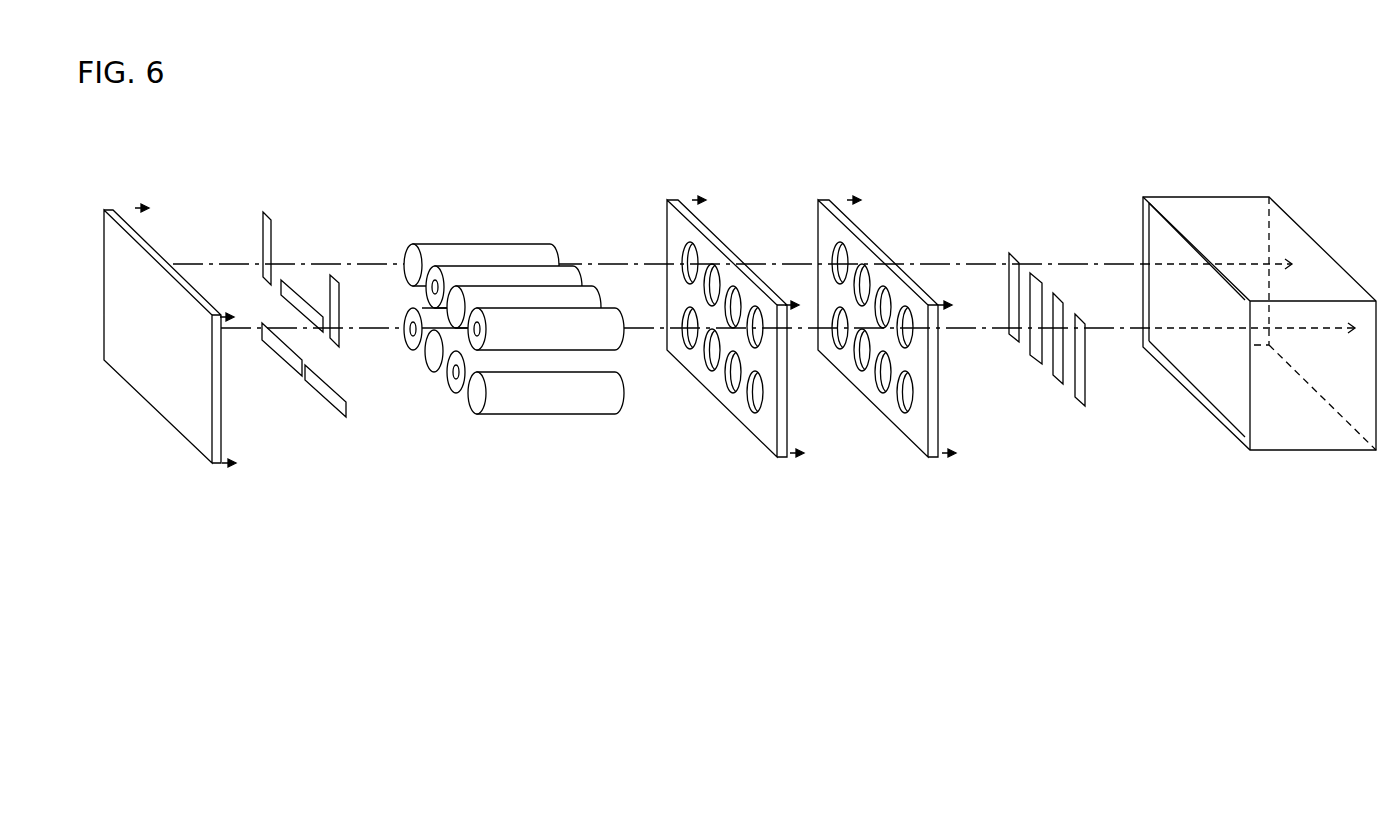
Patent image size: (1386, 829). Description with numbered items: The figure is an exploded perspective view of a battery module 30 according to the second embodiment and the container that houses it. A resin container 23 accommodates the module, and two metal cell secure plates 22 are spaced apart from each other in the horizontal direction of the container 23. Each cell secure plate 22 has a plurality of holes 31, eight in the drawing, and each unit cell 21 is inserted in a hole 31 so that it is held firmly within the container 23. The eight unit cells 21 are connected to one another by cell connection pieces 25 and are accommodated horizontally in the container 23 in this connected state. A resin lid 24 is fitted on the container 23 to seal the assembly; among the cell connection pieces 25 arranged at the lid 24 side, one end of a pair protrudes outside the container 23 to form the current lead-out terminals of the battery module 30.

The battery module 30 is at (1159, 93).
The resin lid 24 is at (128, 250).
The cell connection piece 25 is at (263, 212).
The unit cell 21 is at (485, 253).
The cell secure plate 22 is at (667, 203).
The hole 31 is at (690, 340).
The resin container 23 is at (1208, 204).